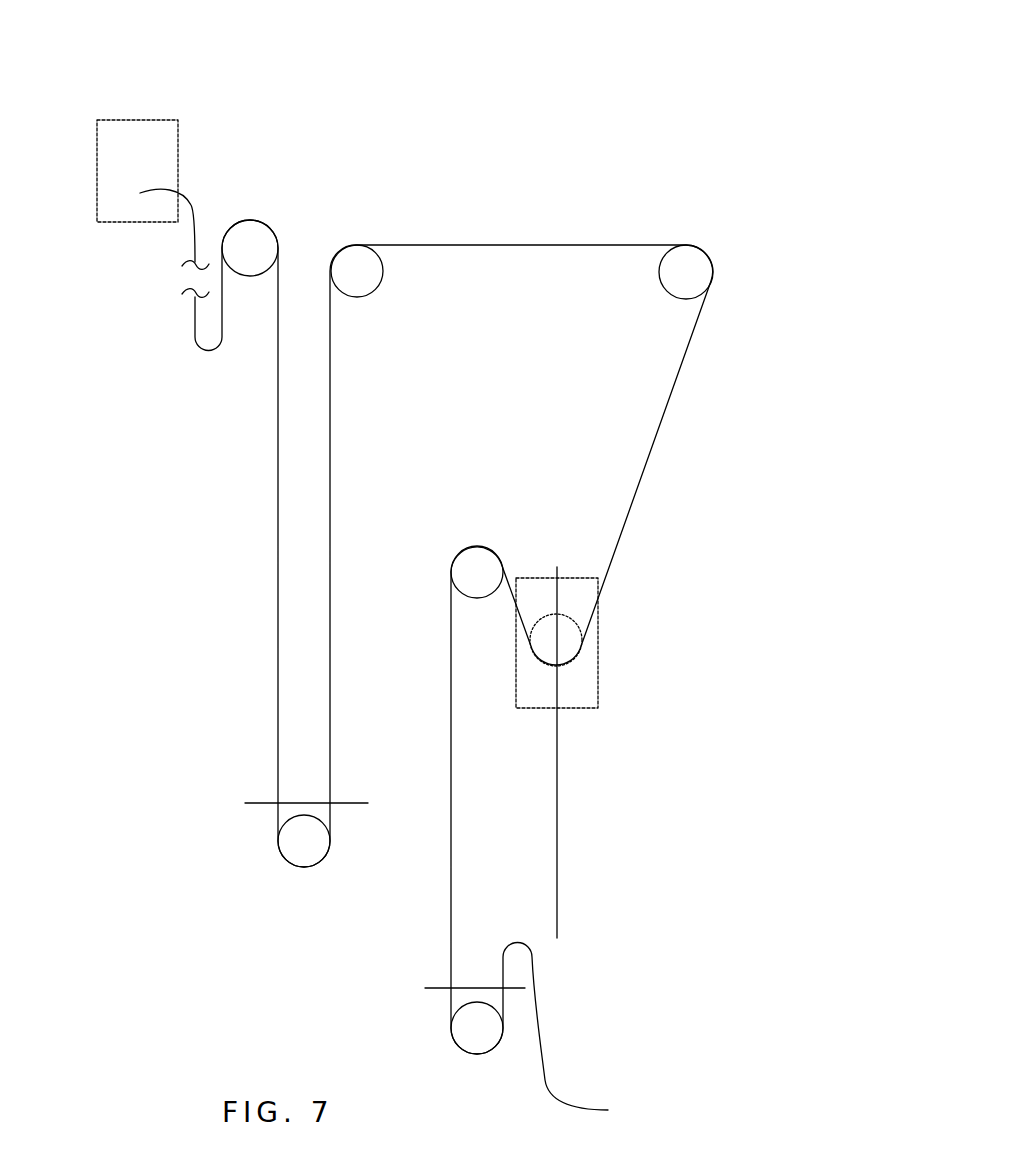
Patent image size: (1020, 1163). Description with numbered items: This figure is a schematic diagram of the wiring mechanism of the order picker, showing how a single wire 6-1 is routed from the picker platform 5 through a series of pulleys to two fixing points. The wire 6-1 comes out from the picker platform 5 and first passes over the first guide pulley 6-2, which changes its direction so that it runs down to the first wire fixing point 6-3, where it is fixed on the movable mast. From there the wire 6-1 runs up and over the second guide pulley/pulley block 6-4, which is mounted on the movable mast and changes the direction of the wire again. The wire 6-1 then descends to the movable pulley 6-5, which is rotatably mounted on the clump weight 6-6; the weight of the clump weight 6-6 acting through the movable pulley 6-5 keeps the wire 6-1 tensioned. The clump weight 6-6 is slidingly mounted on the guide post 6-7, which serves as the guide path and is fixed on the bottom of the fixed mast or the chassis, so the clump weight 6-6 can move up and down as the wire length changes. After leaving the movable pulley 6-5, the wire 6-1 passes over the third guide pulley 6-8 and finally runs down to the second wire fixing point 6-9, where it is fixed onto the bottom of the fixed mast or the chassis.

The picker platform 5 is at (167, 120).
The wire 6-1 is at (523, 245).
The first guide pulley 6-2 is at (252, 245).
The first wire fixing point 6-3 is at (307, 803).
The second guide pulley/pulley block 6-4 is at (357, 271).
The movable pulley 6-5 is at (567, 632).
The clump weight 6-6 is at (583, 692).
The guide post 6-7 is at (558, 837).
The third guide pulley 6-8 is at (475, 570).
The second wire fixing point 6-9 is at (473, 990).